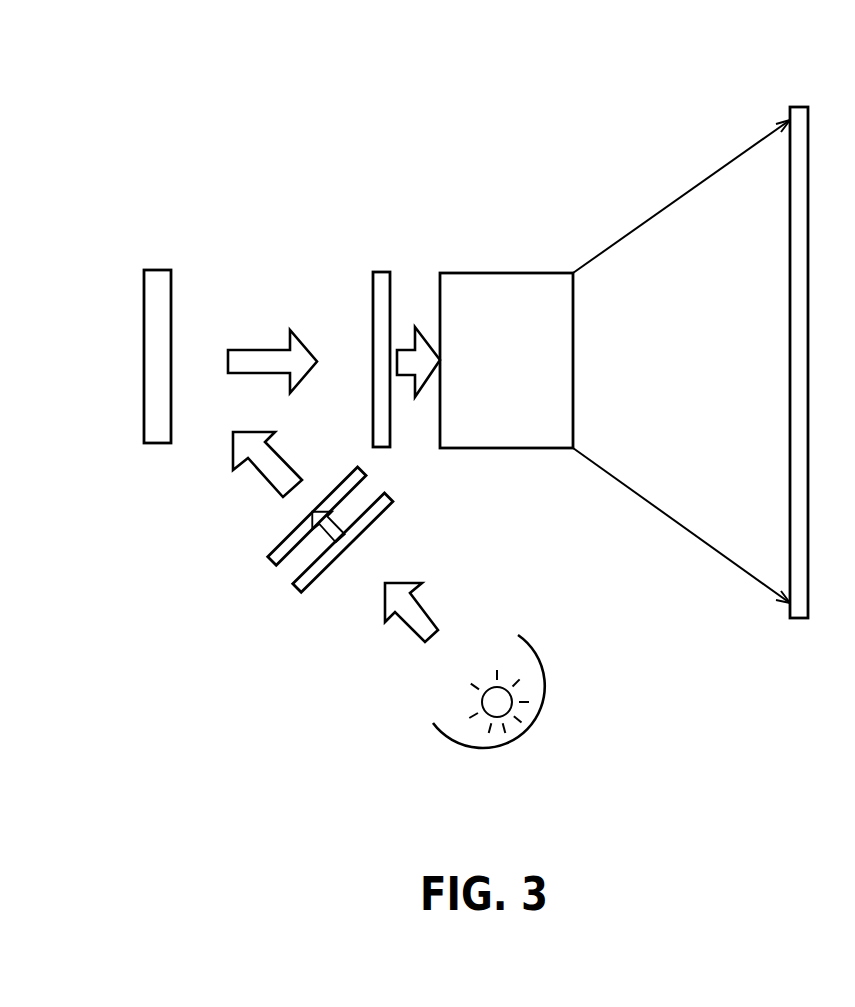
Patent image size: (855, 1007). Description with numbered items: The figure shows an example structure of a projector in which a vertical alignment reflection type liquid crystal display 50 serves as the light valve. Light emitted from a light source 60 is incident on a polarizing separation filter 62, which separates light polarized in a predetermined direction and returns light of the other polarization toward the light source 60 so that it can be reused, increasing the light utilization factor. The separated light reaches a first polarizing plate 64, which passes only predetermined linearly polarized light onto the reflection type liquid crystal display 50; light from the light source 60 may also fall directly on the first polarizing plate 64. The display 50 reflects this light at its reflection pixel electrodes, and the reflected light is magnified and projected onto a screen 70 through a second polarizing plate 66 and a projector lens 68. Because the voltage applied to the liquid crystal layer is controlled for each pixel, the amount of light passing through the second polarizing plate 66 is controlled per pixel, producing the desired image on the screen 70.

The reflection type liquid crystal display 50 is at (159, 446).
The light source 60 is at (466, 752).
The polarizing separation filter 62 is at (296, 587).
The first polarizing plate 64 is at (268, 557).
The second polarizing plate 66 is at (386, 271).
The projector lens 68 is at (513, 272).
The screen 70 is at (806, 106).